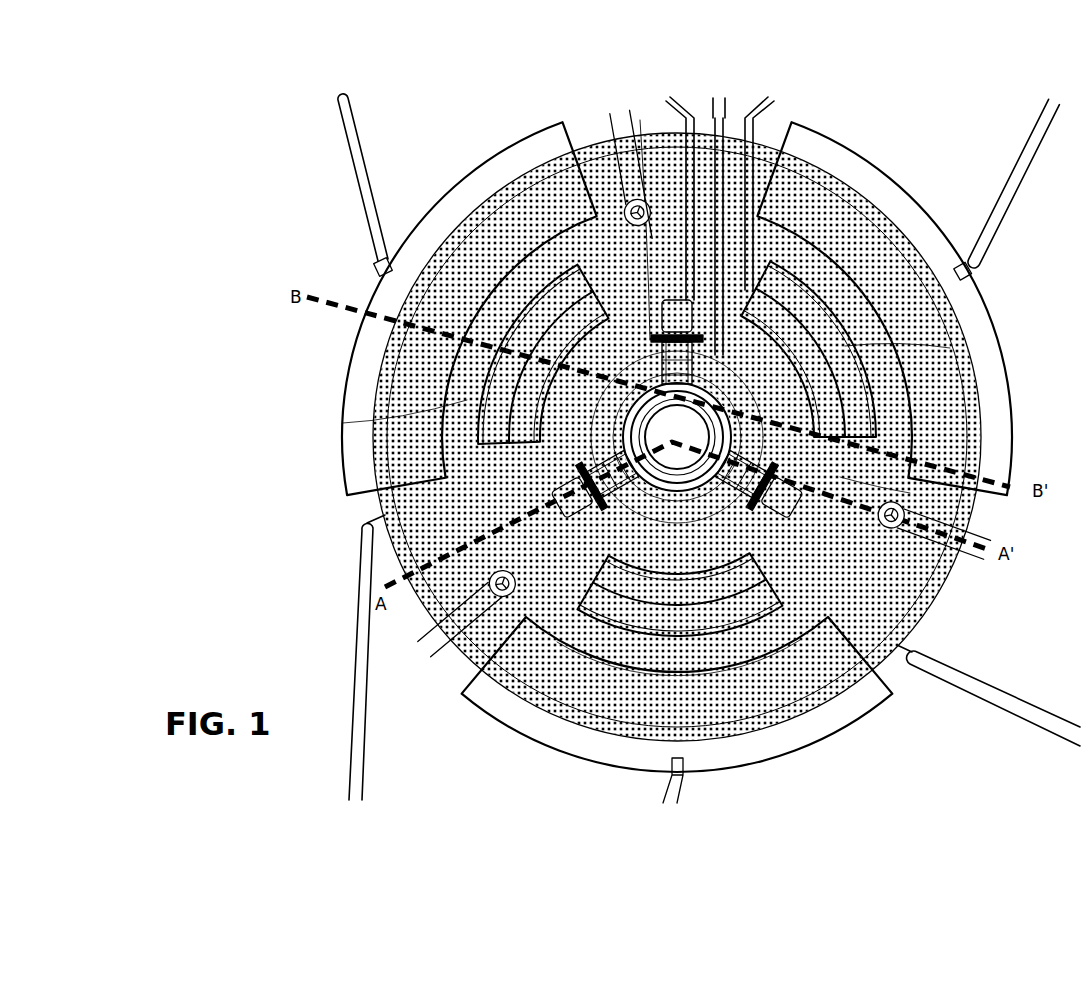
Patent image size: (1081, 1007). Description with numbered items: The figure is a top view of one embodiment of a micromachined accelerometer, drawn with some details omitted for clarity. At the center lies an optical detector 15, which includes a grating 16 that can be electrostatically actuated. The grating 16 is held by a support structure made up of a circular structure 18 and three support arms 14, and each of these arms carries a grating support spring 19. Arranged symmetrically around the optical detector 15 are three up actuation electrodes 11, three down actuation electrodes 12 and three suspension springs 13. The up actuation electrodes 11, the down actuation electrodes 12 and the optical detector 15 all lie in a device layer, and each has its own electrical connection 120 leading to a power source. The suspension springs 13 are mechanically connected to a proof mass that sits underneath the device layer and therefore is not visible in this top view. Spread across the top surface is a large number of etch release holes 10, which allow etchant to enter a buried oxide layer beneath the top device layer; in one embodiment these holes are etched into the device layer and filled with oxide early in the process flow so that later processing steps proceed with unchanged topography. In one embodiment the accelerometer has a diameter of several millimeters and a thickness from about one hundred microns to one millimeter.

The etch release holes 10 is at (380, 503).
The up actuation electrodes 11 is at (455, 206).
The down actuation electrodes 12 is at (950, 348).
The suspension springs 13 is at (608, 137).
The support arms 14 is at (530, 618).
The optical detector 15 is at (420, 428).
The grating 16 is at (905, 510).
The circular structure 18 is at (662, 165).
The grating support spring 19 is at (607, 590).
The electrical connection 120 is at (338, 102).